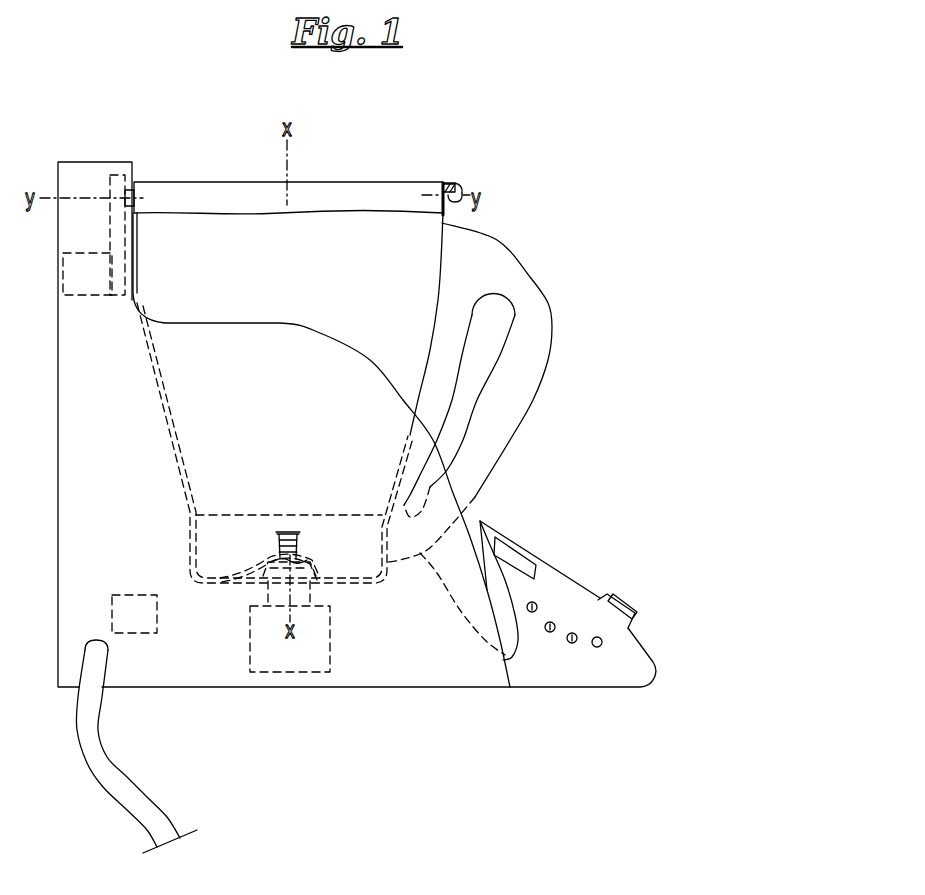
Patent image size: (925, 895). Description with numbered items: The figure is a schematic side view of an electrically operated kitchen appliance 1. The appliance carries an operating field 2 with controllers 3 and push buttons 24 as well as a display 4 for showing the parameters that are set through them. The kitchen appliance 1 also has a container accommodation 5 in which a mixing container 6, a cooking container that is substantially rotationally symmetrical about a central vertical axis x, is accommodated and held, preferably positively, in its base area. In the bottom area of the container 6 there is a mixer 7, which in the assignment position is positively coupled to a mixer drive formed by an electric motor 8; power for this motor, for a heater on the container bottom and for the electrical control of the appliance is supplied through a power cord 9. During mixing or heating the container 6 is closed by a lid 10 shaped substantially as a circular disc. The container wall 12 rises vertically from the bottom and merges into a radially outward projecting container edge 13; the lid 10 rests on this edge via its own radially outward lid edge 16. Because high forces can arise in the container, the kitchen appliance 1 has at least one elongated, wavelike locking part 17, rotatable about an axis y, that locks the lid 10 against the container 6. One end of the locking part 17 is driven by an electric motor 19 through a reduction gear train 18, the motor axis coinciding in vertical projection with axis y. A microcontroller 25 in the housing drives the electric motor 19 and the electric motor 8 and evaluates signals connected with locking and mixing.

The kitchen appliance 1 is at (487, 92).
The operating field 2 is at (547, 588).
The controllers 3 is at (620, 605).
The display 4 is at (507, 550).
The container accommodation 5 is at (188, 567).
The mixing container 6 is at (412, 264).
The mixer 7 is at (243, 590).
The electric motor 8 is at (300, 657).
The power cord 9 is at (137, 793).
The lid 10 is at (443, 170).
The container wall 12 is at (418, 317).
The container edge 13 is at (464, 191).
The lid edge 16 is at (450, 183).
The locking part 17 is at (348, 182).
The reduction gear train 18 is at (117, 222).
The electric motor 19 is at (78, 273).
The push buttons 24 is at (532, 613).
The microcontroller 25 is at (128, 612).